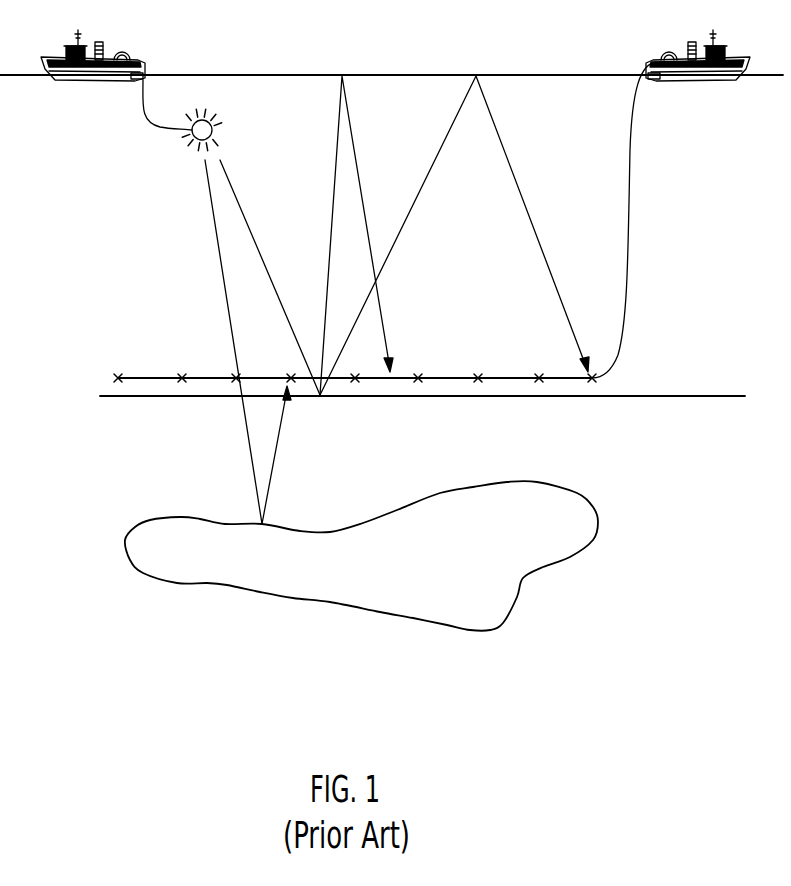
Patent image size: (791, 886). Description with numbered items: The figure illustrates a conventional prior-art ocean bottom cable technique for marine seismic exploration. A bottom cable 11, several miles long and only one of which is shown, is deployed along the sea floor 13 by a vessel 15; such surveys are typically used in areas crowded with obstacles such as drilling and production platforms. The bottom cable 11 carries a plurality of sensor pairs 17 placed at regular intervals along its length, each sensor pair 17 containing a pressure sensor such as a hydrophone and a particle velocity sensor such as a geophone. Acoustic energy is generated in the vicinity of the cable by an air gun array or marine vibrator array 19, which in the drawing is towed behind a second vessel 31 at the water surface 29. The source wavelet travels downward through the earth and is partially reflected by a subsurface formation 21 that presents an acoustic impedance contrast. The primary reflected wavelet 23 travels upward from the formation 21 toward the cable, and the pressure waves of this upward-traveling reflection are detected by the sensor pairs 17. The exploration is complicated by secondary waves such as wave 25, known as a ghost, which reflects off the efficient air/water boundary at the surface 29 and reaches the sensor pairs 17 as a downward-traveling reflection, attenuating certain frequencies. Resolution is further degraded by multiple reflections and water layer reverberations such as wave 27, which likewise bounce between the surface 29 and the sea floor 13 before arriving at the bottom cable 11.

The bottom cable 11 is at (160, 373).
The sea floor 13 is at (729, 395).
The vessel 15 is at (689, 57).
The sensor pairs 17 is at (478, 382).
The marine vibrator array 19 is at (214, 128).
The formation 21 is at (200, 520).
The primary reflected wavelet 23 is at (276, 455).
The wave 25 is at (354, 140).
The wave 27 is at (510, 168).
The surface 29 is at (290, 75).
The source vessel 31 is at (142, 62).